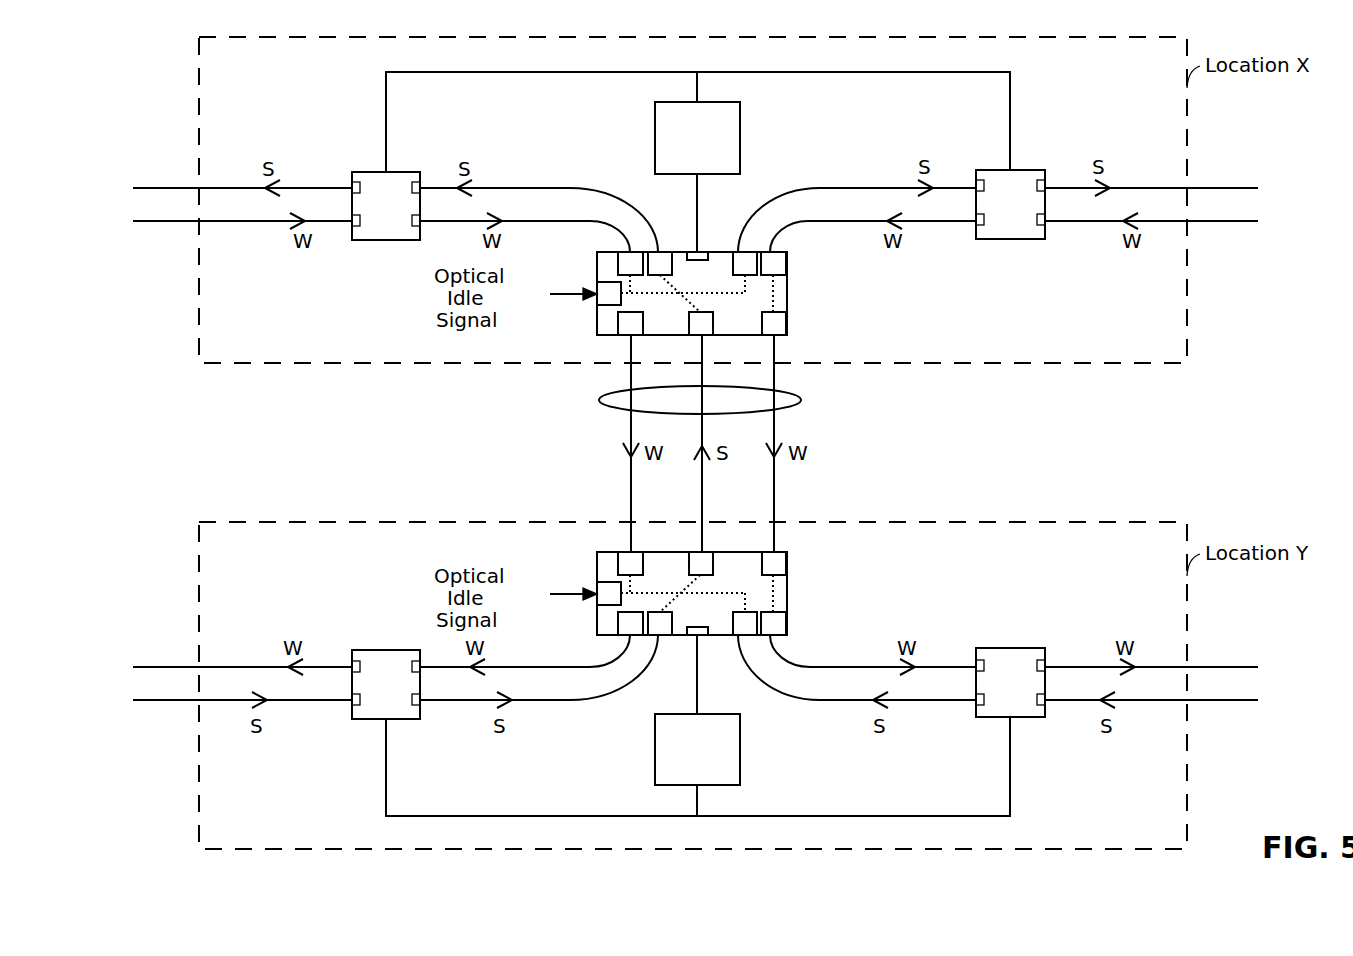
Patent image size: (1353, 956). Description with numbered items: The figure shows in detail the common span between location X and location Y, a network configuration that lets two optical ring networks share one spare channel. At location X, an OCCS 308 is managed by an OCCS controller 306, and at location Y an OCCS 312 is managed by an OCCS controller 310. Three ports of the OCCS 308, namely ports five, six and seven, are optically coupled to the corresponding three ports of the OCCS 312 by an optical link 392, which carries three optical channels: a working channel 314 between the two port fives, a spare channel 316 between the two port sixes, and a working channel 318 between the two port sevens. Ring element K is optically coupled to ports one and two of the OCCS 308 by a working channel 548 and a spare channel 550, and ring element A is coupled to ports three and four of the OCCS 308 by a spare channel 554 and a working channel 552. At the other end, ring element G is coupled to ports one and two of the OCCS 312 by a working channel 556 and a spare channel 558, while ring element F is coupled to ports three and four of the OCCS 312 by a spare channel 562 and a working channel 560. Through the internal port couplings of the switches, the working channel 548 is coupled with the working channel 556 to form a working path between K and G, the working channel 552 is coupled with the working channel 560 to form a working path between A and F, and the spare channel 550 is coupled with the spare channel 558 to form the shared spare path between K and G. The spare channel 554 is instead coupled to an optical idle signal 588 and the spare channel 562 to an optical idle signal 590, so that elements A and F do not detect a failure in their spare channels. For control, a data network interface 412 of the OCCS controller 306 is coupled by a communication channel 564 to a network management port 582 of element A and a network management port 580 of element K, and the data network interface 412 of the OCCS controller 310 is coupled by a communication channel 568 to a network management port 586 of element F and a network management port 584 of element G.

The OCCS controller 306 is at (742, 130).
The OCCS 308 is at (790, 312).
The OCCS controller 310 is at (742, 740).
The OCCS 312 is at (790, 584).
The working channel 314 is at (631, 502).
The spare channel 316 is at (702, 500).
The working channel 318 is at (774, 502).
The optical link 392 is at (801, 400).
The data network interface 412 is at (695, 100).
The working channel 548 is at (592, 224).
The spare channel 550 is at (566, 186).
The working channel 552 is at (800, 223).
The spare channel 554 is at (826, 186).
The working channel 556 is at (576, 666).
The spare channel 558 is at (556, 702).
The working channel 560 is at (813, 666).
The spare channel 562 is at (834, 702).
The communication channel 564 is at (708, 72).
The communication channel 568 is at (645, 818).
The network management port 580 is at (386, 170).
The network management port 582 is at (1010, 168).
The network management port 584 is at (386, 721).
The network management port 586 is at (1010, 719).
The optical idle signal 588 is at (552, 296).
The optical idle signal 590 is at (552, 596).